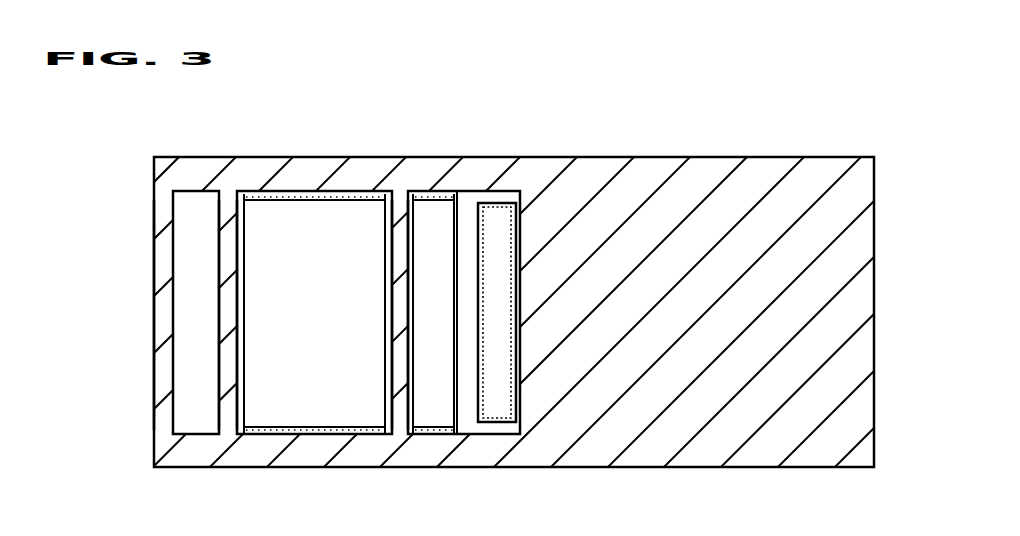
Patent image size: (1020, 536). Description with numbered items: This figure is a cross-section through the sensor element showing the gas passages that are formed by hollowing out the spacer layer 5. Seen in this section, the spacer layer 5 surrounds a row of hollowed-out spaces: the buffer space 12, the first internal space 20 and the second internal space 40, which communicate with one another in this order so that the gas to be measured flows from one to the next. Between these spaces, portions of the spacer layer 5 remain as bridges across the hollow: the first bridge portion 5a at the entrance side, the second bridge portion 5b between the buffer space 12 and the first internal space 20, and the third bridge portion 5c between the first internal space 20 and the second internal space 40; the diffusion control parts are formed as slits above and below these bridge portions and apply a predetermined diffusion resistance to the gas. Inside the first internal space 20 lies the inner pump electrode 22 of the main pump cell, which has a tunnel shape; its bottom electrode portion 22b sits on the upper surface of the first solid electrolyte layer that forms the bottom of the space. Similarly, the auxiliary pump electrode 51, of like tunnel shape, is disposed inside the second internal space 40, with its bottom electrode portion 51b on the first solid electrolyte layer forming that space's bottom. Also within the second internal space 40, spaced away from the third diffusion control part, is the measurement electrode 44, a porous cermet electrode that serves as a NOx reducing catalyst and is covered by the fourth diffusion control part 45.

The spacer layer 5 is at (868, 230).
The first bridge portion 5a is at (165, 272).
The second bridge portion 5b is at (232, 272).
The third bridge portion 5c is at (393, 250).
The buffer space 12 is at (192, 220).
The first internal space 20 is at (263, 220).
The inner pump electrode 22 is at (317, 194).
The bottom electrode portion 22b is at (260, 317).
The second internal space 40 is at (463, 220).
The measurement electrode 44 is at (488, 204).
The fourth diffusion control part 45 is at (502, 203).
The auxiliary pump electrode 51 is at (428, 194).
The bottom electrode portion 51b is at (423, 343).